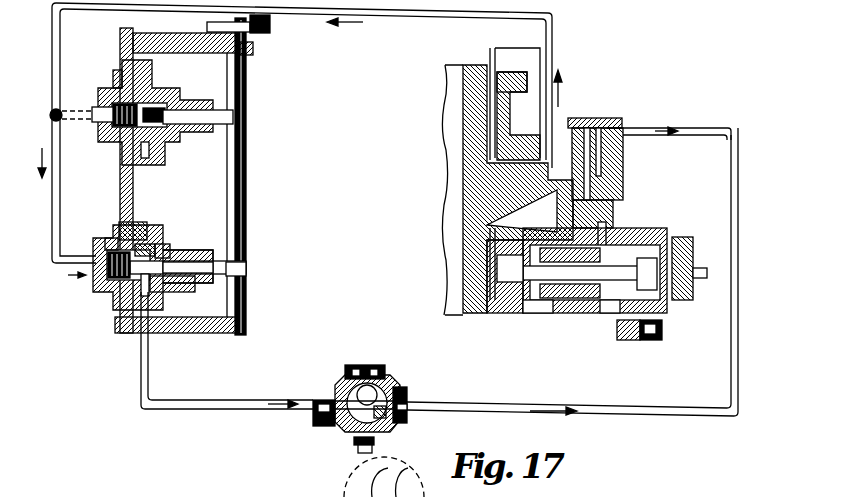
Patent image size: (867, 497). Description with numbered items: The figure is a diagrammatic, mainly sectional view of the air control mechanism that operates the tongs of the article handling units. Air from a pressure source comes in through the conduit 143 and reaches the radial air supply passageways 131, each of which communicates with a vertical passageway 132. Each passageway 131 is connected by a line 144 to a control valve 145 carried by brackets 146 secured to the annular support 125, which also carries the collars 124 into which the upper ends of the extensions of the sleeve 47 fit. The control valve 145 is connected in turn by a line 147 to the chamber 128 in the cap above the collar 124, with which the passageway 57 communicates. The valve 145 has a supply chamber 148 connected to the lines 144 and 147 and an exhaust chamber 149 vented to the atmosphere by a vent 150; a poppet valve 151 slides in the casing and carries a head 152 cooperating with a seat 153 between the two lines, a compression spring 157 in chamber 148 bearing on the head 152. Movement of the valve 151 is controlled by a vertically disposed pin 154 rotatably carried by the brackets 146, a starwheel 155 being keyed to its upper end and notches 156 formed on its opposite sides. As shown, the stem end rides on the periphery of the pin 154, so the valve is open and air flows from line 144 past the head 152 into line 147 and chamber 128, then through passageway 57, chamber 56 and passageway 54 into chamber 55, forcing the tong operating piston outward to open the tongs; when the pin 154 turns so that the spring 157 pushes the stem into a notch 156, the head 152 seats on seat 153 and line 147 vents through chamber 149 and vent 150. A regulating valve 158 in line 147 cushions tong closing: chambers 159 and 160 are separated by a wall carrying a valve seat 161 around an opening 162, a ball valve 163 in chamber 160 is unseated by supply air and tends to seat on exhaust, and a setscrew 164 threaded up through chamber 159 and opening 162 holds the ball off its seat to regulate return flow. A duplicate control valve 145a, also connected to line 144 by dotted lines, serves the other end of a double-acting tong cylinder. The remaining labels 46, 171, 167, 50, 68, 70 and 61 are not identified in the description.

The line 144 is at (53, 64).
The brackets 146 is at (180, 50).
The base plate 46 is at (180, 334).
The pin 154 is at (247, 198).
The starwheel 155 is at (262, 29).
The retainer 171 is at (262, 36).
The control valve 145a is at (101, 132).
The control valve 145 is at (97, 286).
The compression spring 157 is at (98, 243).
The supply chamber 148 is at (113, 243).
The head 152 is at (132, 237).
The seat 153 is at (142, 246).
The vent 150 is at (162, 246).
The poppet valve 151 is at (192, 252).
The exhaust chamber 149 is at (167, 283).
The notches 156 is at (246, 268).
The line 147 is at (227, 408).
The regulating valve 158 is at (338, 393).
The chamber 160 is at (370, 366).
The chamber 159 is at (342, 423).
The ball valve 163 is at (393, 385).
The valve seat 161 is at (392, 417).
The setscrew 164 is at (353, 443).
The opening 162 is at (378, 432).
The air supply passageways 131 is at (463, 158).
The annular support 125 is at (522, 211).
The conduit 143 is at (491, 51).
The vertical passageway 132 is at (497, 114).
The plunger head 167 is at (515, 72).
The chamber 128 is at (598, 126).
The collar 124 is at (624, 156).
The passageway 57 is at (614, 191).
The sleeve 47 is at (622, 250).
The spool housing 50 is at (560, 313).
The passageway 54 is at (590, 313).
The chamber 55 is at (673, 260).
The chamber 56 is at (500, 250).
The port 68 is at (538, 314).
The port 70 is at (607, 313).
The end cap 61 is at (630, 341).